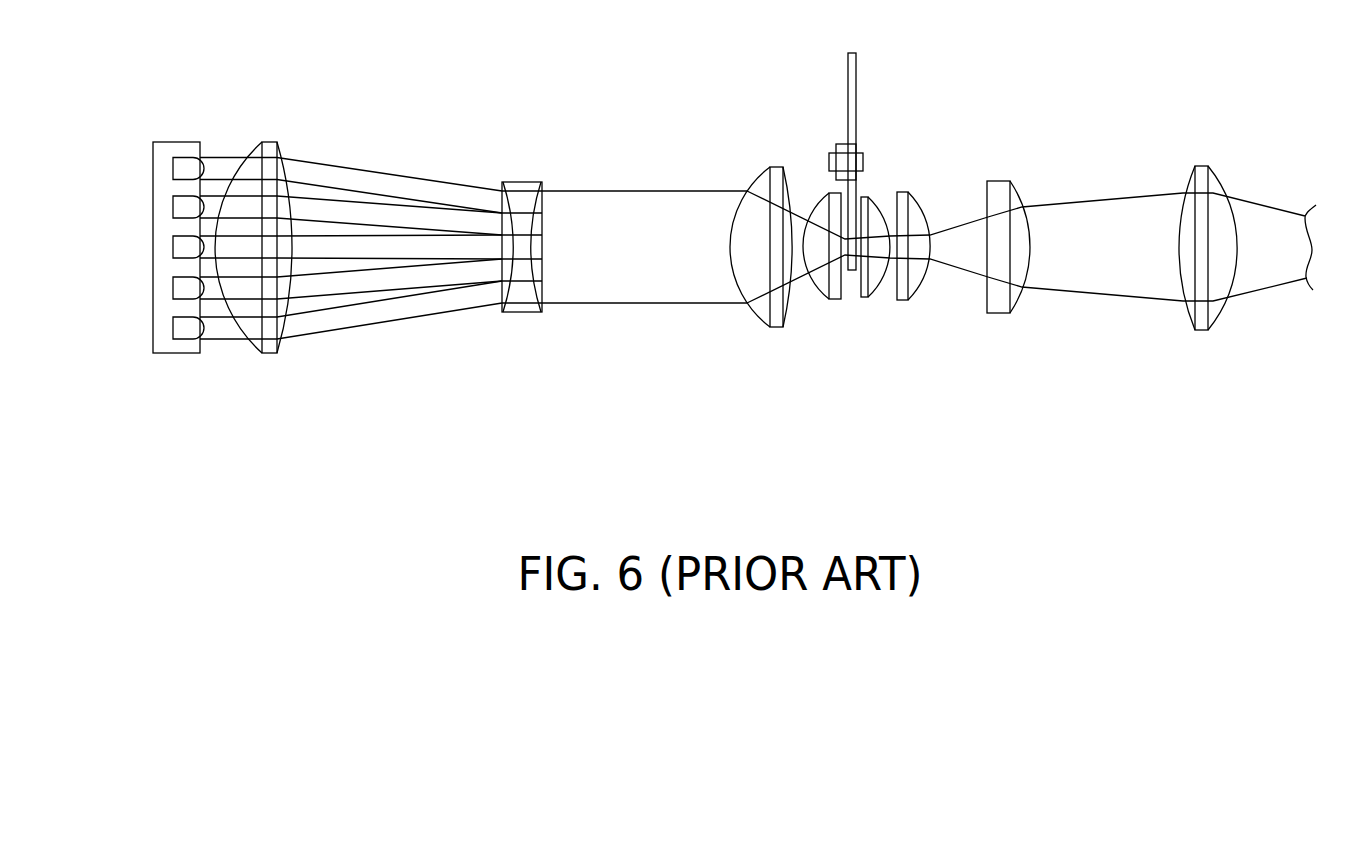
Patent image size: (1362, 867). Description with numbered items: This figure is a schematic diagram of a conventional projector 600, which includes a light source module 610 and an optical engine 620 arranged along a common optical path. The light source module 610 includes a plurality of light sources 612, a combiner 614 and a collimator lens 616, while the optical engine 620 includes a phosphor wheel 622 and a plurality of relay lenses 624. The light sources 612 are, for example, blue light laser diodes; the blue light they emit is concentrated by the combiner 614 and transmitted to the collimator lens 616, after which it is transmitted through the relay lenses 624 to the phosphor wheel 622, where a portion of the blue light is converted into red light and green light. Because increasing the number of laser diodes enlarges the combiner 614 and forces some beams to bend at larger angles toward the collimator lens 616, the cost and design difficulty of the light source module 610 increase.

The projector 600 is at (731, 271).
The light source module 610 is at (350, 250).
The light sources 612 is at (170, 148).
The combiner 614 is at (255, 146).
The collimator lens 616 is at (518, 181).
The optical engine 620 is at (1020, 246).
The phosphor wheel 622 is at (852, 88).
The relay lenses 624 is at (778, 176).